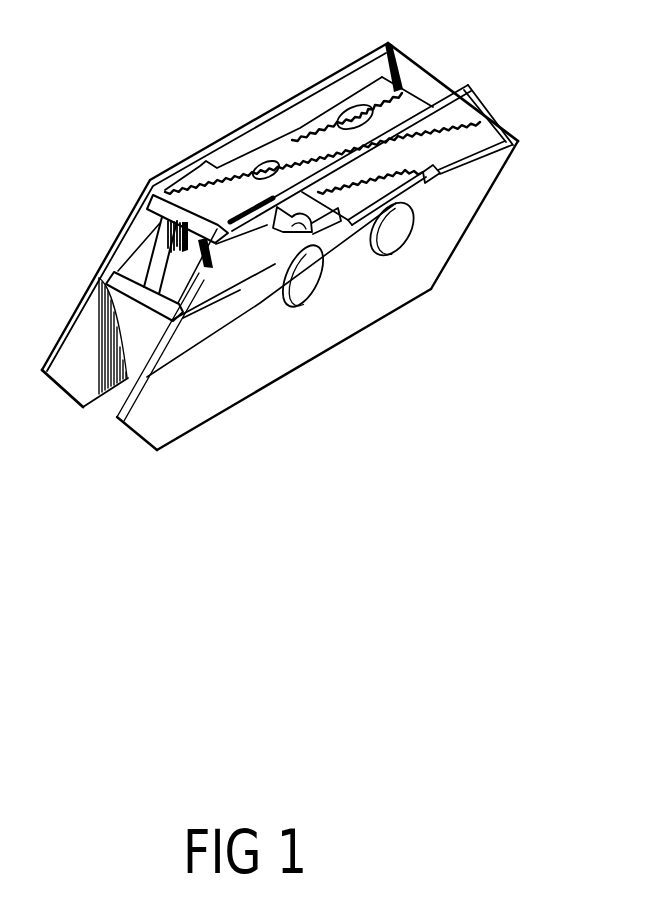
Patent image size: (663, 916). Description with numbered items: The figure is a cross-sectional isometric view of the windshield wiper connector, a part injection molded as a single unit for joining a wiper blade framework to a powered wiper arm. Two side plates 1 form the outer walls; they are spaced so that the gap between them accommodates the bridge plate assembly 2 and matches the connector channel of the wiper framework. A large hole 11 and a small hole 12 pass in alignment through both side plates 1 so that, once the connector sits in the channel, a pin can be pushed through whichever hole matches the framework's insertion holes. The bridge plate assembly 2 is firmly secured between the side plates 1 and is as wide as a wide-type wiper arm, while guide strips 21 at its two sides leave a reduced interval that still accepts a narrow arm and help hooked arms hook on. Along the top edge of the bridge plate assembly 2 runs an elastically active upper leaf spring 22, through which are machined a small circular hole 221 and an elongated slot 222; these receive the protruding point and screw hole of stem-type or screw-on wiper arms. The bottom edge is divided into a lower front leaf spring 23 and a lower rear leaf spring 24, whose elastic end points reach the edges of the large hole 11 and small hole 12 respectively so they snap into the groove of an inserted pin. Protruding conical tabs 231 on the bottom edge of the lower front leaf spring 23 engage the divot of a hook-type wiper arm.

The side plate 1 is at (87, 337).
The large hole 11 is at (300, 290).
The small hole 12 is at (388, 231).
The bridge plate assembly 2 is at (157, 235).
The guide strip 21 is at (165, 183).
The upper leaf spring 22 is at (403, 92).
The small circular hole 221 is at (263, 165).
The elongated slot 222 is at (353, 110).
The lower front leaf spring 23 is at (324, 222).
The conical tab 231 is at (283, 233).
The lower rear leaf spring 24 is at (457, 146).